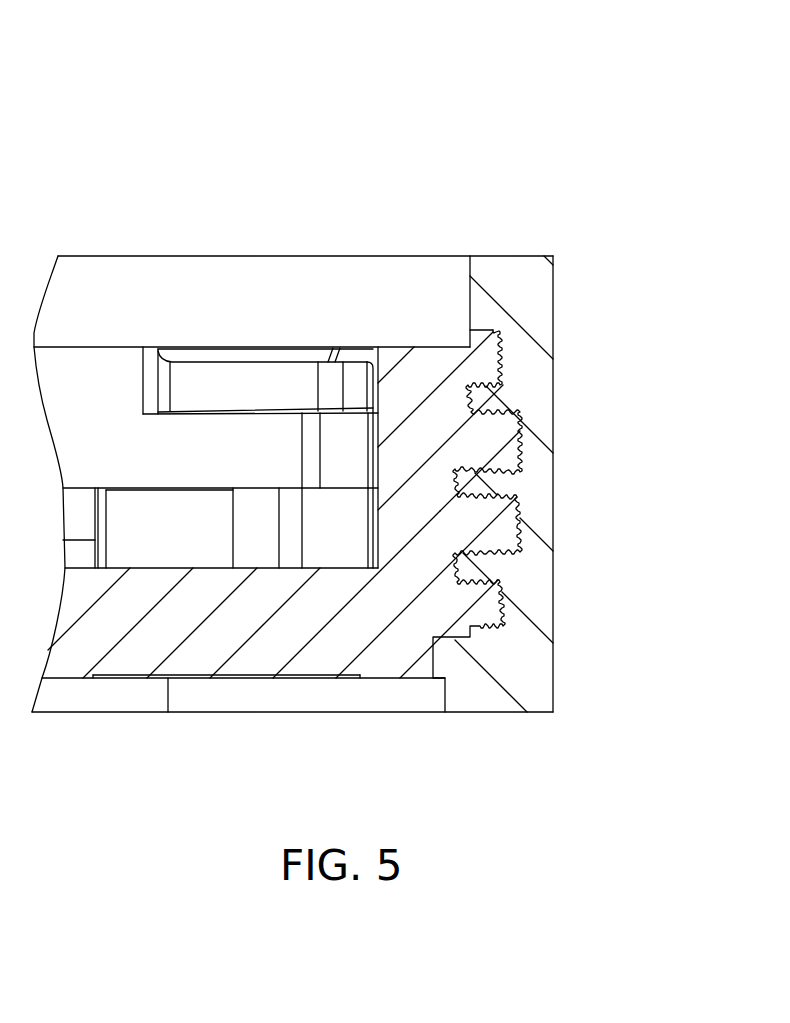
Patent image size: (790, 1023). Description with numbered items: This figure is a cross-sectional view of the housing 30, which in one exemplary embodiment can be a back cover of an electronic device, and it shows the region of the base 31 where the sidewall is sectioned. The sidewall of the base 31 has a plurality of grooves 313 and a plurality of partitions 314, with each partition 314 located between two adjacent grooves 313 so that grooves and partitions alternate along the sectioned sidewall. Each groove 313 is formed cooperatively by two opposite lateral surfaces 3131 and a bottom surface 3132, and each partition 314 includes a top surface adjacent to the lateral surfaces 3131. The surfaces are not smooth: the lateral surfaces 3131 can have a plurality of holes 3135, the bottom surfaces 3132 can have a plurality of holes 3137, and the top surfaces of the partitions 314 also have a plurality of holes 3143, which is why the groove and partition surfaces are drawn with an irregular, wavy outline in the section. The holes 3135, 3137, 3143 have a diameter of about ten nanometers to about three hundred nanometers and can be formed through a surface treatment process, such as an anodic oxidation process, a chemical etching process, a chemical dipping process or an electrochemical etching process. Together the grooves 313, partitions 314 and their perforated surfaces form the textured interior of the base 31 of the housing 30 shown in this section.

The housing 30 is at (205, 50).
The base 31 is at (507, 266).
The groove 313 is at (662, 604).
The lateral surface 3131 is at (488, 630).
The bottom surface 3132 is at (502, 612).
The hole 3135 is at (490, 472).
The hole 3137 is at (523, 441).
The partition 314 is at (483, 568).
The hole 3143 is at (478, 392).